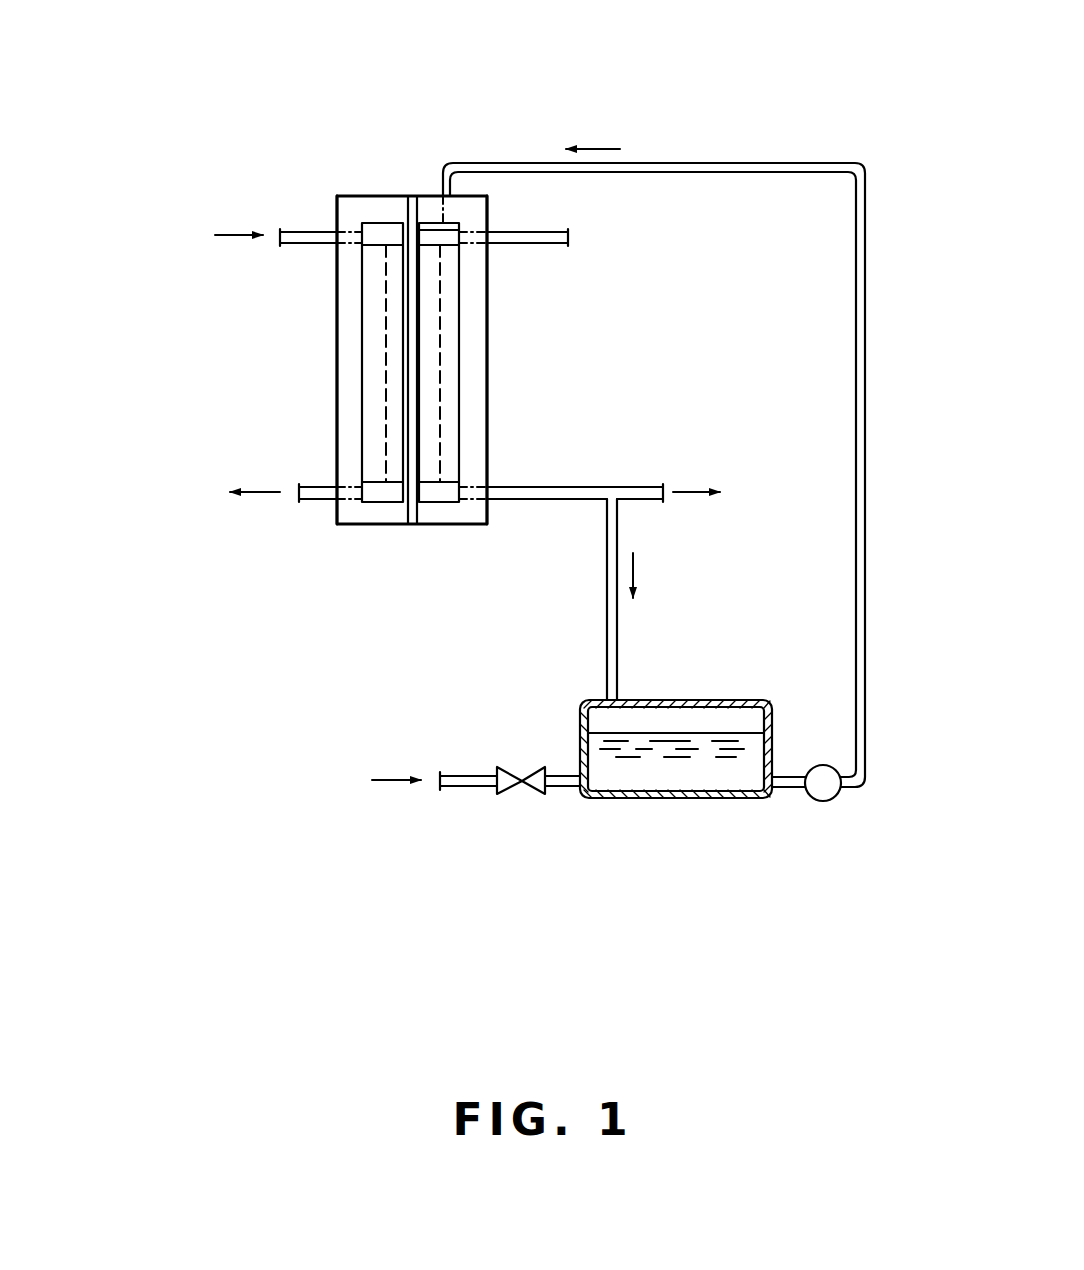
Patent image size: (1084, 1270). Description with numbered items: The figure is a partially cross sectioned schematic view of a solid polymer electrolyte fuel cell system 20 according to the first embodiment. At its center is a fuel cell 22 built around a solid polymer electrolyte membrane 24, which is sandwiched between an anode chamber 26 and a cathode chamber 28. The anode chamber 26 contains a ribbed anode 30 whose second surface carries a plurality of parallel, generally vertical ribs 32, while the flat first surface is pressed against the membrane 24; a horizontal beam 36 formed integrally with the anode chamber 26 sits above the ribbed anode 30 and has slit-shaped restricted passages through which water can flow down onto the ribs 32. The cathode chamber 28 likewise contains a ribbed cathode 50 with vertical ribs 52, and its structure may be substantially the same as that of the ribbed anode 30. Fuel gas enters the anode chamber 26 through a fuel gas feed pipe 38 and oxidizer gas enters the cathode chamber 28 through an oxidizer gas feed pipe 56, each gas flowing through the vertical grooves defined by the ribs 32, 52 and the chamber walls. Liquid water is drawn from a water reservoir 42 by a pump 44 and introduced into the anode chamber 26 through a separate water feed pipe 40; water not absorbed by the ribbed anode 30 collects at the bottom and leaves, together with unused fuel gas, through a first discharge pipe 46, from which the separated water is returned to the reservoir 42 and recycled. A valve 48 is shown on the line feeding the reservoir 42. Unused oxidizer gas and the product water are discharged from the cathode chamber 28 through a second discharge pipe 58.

The solid polymer electrolyte fuel cell system 20 is at (549, 97).
The fuel cell 22 is at (306, 275).
The solid polymer electrolyte membrane 24 is at (410, 196).
The anode chamber 26 is at (475, 304).
The cathode chamber 28 is at (348, 315).
The ribbed anode 30 is at (428, 335).
The ribs 32 is at (450, 412).
The beam 36 is at (428, 238).
The fuel gas feed pipe 38 is at (522, 245).
The water feed pipe 40 is at (657, 162).
The water reservoir 42 is at (702, 798).
The pump 44 is at (835, 800).
The first discharge pipe 46 is at (585, 487).
The valve 48 is at (522, 786).
The ribbed cathode 50 is at (395, 350).
The ribs 52 is at (372, 430).
The oxidizer gas feed pipe 56 is at (306, 231).
The second discharge pipe 58 is at (318, 500).